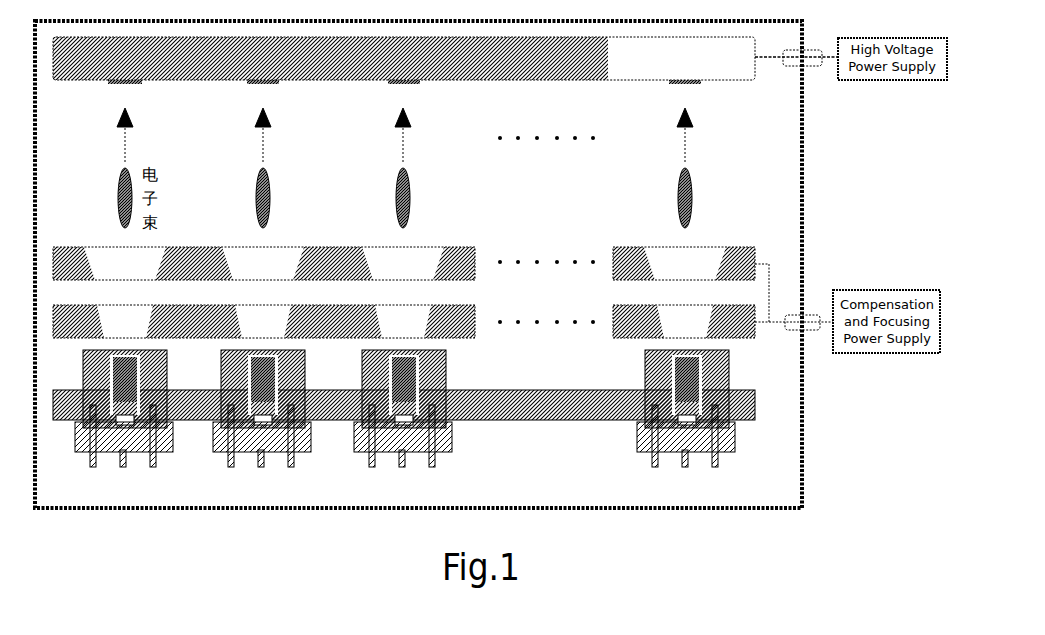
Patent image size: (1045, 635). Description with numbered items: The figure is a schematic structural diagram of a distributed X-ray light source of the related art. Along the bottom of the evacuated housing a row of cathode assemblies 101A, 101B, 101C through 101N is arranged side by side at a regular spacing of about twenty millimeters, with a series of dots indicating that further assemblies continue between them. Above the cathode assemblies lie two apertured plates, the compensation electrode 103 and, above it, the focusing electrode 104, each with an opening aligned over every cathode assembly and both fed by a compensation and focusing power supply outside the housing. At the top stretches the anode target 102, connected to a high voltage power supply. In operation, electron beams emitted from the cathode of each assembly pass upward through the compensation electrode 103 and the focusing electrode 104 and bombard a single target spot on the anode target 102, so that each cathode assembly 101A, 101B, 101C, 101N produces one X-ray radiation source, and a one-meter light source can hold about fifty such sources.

The anode target 102 is at (500, 81).
The compensation electrode 103 is at (442, 339).
The focusing electrode 104 is at (455, 245).
The cathode assembly 101A is at (124, 425).
The cathode assembly 101B is at (262, 425).
The cathode assembly 101C is at (403, 425).
The cathode assembly 101N is at (686, 425).